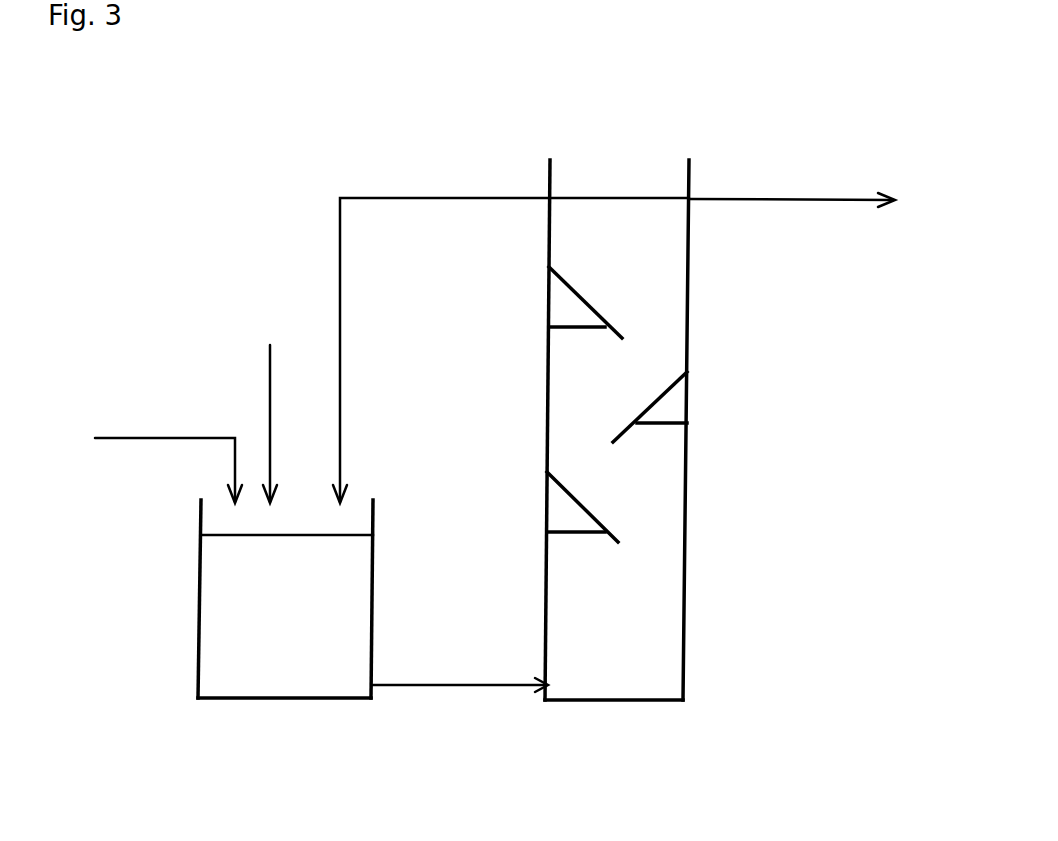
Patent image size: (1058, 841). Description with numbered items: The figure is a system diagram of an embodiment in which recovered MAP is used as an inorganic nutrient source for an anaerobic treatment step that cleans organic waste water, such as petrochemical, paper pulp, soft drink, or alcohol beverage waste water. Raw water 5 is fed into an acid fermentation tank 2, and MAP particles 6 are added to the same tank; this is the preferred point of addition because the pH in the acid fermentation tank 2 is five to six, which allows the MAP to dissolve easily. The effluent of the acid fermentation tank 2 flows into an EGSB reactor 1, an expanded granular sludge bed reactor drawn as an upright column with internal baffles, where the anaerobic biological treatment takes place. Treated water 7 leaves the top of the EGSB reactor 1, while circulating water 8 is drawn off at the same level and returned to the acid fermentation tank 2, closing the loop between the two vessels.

The EGSB reactor 1 is at (687, 468).
The acid fermentation tank 2 is at (260, 699).
The raw water 5 is at (156, 461).
The MAP particles 6 is at (272, 405).
The treated water 7 is at (807, 204).
The circulating water 8 is at (431, 198).